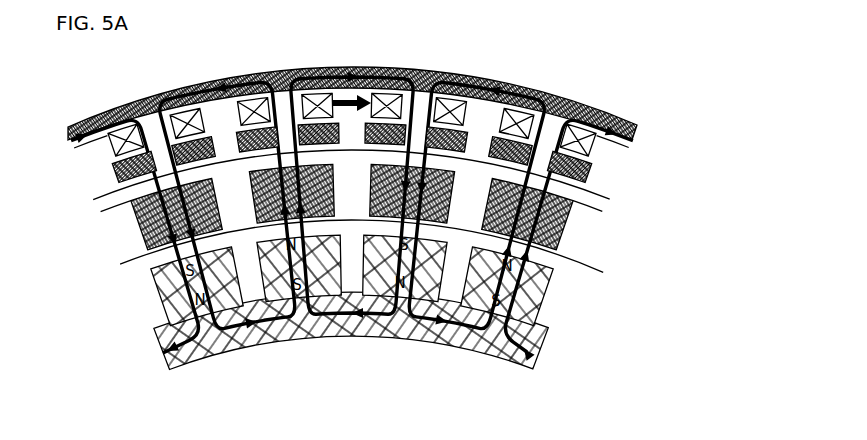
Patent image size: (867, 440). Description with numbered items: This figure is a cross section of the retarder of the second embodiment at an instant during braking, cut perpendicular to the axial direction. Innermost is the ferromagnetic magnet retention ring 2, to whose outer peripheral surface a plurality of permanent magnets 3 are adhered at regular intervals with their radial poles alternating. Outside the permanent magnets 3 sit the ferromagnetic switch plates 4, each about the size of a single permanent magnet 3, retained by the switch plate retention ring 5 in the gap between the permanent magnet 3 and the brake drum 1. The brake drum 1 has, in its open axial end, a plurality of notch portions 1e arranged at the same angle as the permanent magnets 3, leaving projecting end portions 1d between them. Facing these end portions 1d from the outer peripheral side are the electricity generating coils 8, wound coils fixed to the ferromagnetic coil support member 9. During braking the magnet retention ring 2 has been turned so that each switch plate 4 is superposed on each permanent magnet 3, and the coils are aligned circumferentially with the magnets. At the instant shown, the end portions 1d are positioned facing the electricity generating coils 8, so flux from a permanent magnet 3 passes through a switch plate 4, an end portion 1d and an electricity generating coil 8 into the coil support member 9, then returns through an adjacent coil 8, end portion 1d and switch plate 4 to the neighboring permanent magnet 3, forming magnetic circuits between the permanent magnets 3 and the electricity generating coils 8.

The brake drum 1 is at (614, 173).
The end portion 1d is at (112, 180).
The notch portion 1e is at (222, 145).
The magnet retention ring 2 is at (407, 330).
The permanent magnet 3 is at (162, 293).
The switch plate 4 is at (128, 240).
The switch plate retention ring 5 is at (565, 268).
The electricity generating coil 8 is at (107, 153).
The coil support member 9 is at (638, 131).